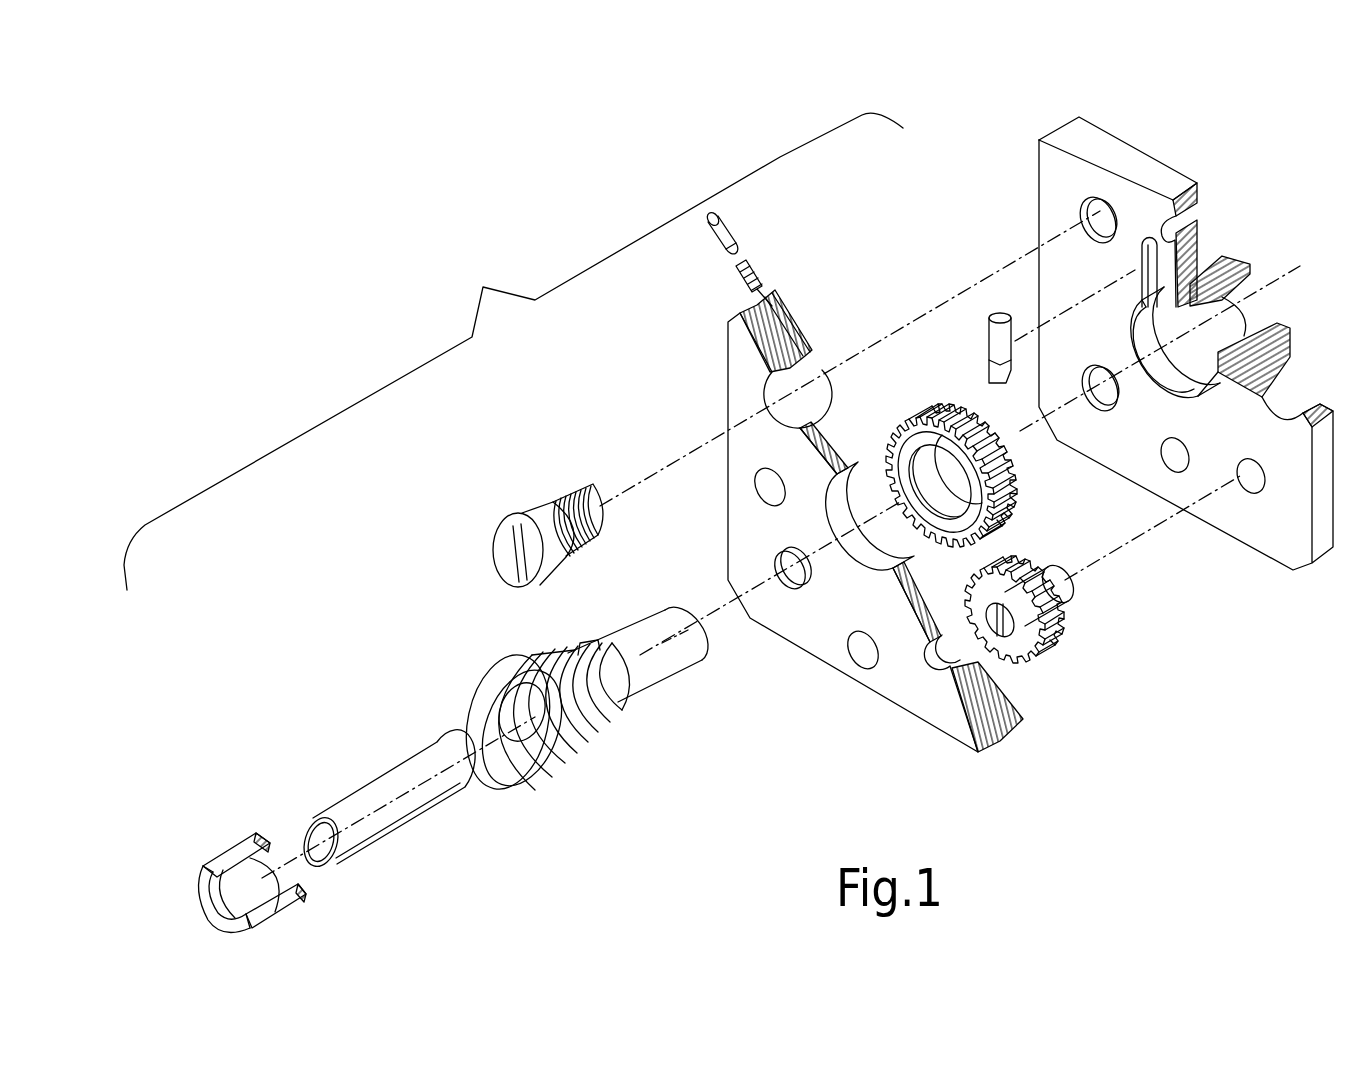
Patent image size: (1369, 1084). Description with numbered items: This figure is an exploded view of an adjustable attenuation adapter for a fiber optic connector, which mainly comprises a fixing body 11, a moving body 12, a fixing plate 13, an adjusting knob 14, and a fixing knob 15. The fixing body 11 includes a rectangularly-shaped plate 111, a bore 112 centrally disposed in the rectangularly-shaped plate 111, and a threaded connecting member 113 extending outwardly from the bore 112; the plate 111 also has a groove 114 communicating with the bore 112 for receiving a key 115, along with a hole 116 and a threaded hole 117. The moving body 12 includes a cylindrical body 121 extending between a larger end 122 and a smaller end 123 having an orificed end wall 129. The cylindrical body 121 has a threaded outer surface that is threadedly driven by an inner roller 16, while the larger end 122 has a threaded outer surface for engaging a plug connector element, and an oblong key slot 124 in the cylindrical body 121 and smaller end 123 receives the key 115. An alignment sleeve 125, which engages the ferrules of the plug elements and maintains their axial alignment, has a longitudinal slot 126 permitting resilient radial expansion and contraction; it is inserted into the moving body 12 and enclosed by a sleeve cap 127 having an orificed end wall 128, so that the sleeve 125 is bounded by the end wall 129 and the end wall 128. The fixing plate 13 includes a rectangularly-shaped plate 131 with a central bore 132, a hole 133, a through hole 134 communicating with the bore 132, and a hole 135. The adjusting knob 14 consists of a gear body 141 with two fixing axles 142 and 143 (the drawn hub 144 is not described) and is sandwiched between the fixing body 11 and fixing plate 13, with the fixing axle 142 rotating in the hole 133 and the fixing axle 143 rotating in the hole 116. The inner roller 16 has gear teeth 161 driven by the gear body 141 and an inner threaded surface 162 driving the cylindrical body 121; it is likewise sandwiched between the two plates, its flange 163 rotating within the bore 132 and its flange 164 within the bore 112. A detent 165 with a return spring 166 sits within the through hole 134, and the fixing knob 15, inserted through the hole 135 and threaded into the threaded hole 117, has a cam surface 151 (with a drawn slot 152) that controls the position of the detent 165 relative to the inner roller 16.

The fixing body 11 is at (1124, 366).
The rectangularly-shaped plate 111 is at (1163, 172).
The bore 112 is at (1187, 387).
The threaded connecting member 113 is at (1230, 260).
The groove 114 is at (1140, 247).
The key 115 is at (995, 338).
The hole 116 is at (1256, 490).
The threaded hole 117 is at (1082, 208).
The moving body 12 is at (594, 688).
The cylindrical body 121 is at (613, 717).
The larger end 122 is at (560, 767).
The smaller end 123 is at (660, 660).
The oblong key slot 124 is at (591, 641).
The alignment sleeve 125 is at (389, 769).
The longitudinal slot 126 is at (385, 838).
The sleeve cap 127 is at (247, 833).
The orificed end wall 128 is at (232, 799).
The orificed end wall 129 is at (685, 607).
The fixing plate 13 is at (811, 533).
The rectangularly-shaped plate 131 is at (825, 637).
The bore 132 is at (855, 560).
The hole 133 is at (945, 665).
The through hole 134 is at (820, 330).
The hole 135 is at (770, 390).
The adjusting knob 14 is at (1055, 605).
The gear body 141 is at (1063, 623).
The fixing axle 142 is at (1023, 650).
The fixing axle 143 is at (1058, 583).
The gear hub 144 is at (990, 607).
The fixing knob 15 is at (515, 499).
The cam surface 151 is at (530, 527).
The screw slot 152 is at (500, 547).
The inner roller 16 is at (973, 442).
The gear teeth 161 is at (945, 415).
The inner threaded surface 162 is at (925, 495).
The flange 163 is at (893, 430).
The flange 164 is at (1010, 458).
The detent 165 is at (732, 230).
The return spring 166 is at (757, 273).